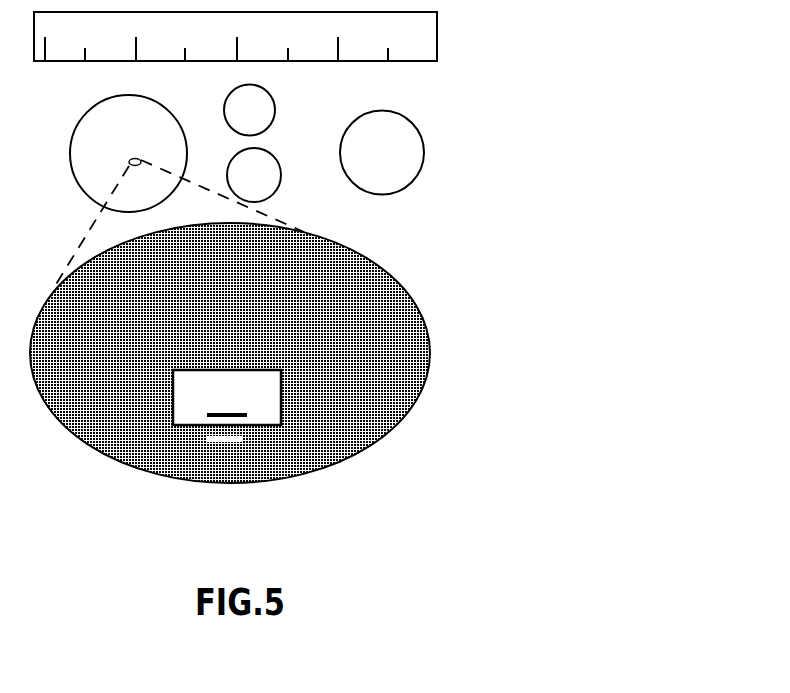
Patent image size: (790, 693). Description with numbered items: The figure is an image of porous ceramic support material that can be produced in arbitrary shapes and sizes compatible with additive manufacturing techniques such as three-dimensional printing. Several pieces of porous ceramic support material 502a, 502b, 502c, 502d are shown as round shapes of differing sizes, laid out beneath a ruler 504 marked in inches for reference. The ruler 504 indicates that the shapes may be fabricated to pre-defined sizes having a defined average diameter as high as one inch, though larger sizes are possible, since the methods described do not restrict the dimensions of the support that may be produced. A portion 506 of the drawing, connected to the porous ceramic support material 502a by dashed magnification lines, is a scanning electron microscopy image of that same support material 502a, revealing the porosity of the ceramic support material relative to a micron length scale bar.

The ruler 504 is at (97, 41).
The porous ceramic support material 502a is at (152, 140).
The porous ceramic support material 502b is at (252, 119).
The porous ceramic support material 502c is at (255, 167).
The porous ceramic support material 502d is at (413, 162).
The portion 506 is at (430, 338).